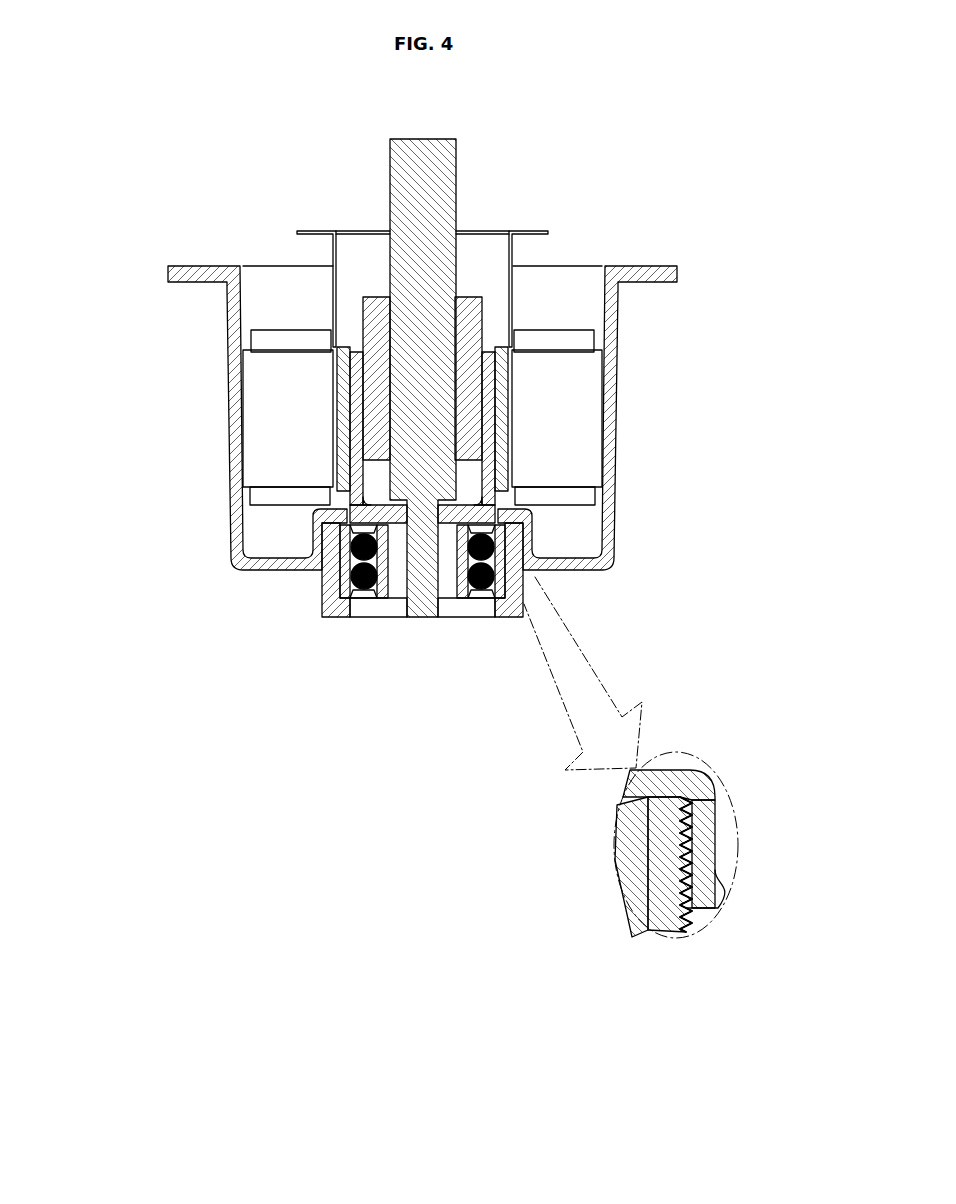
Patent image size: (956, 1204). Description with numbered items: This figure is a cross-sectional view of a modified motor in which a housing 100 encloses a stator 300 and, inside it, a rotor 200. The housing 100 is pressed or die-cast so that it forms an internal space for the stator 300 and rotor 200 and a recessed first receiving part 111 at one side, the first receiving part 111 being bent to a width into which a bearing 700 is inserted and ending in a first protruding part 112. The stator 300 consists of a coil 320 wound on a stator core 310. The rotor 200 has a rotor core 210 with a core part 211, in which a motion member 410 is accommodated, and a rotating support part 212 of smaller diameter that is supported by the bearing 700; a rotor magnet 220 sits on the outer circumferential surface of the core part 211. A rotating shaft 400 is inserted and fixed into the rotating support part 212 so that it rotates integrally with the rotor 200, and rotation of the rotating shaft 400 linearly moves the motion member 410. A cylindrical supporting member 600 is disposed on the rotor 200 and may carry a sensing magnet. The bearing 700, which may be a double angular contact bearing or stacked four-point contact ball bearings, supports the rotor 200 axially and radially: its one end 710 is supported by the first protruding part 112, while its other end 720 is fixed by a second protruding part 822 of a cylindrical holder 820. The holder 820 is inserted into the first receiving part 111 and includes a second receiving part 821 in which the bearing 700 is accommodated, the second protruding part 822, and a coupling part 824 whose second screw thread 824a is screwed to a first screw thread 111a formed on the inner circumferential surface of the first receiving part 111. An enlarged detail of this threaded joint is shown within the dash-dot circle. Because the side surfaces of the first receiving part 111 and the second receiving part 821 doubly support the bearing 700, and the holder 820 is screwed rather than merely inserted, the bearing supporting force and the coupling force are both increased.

The housing 100 is at (619, 292).
The first receiving part 111 is at (531, 521).
The first screw thread 111a is at (690, 830).
The first protruding part 112 is at (520, 507).
The rotor 200 is at (280, 445).
The rotor core 210 is at (305, 448).
The core part 211 is at (353, 440).
The rotating support part 212 is at (353, 513).
The rotor magnet 220 is at (342, 374).
The stator 300 is at (531, 417).
The stator core 310 is at (588, 417).
The coil 320 is at (596, 331).
The rotating shaft 400 is at (558, 393).
The motion member 410 is at (470, 455).
The supporting member 600 is at (529, 231).
The bearing 700 is at (537, 786).
The one end of the bearing 710 is at (537, 786).
The other end of the bearing 720 is at (525, 598).
The holder 820 is at (537, 786).
The second receiving part 821 is at (345, 590).
The second protruding part 822 is at (350, 608).
The coupling part 824 is at (330, 560).
The second screw thread 824a is at (696, 913).